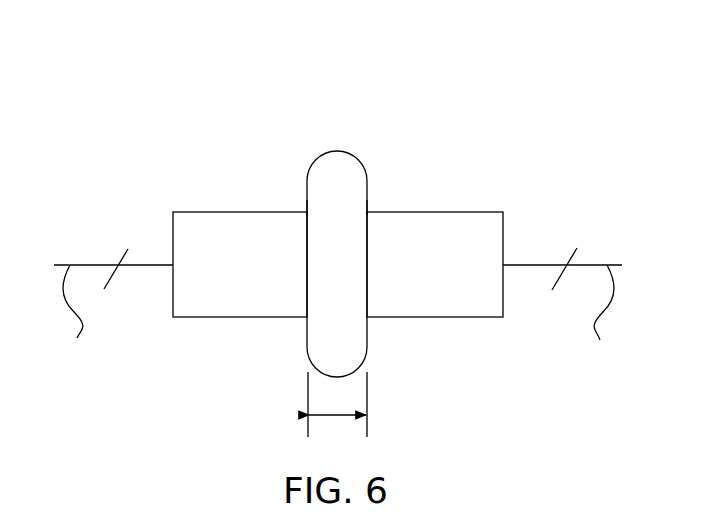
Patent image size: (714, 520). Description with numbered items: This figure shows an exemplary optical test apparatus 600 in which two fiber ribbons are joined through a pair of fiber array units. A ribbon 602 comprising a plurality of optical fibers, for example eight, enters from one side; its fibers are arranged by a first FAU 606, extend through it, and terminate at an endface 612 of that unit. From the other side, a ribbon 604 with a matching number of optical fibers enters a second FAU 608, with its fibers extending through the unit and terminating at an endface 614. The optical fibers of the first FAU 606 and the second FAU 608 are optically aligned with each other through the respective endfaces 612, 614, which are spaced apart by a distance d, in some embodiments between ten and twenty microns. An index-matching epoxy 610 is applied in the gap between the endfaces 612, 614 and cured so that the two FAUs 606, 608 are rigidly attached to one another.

The optical test apparatus 600 is at (137, 87).
The ribbon 602 is at (113, 311).
The ribbon 604 is at (563, 311).
The first FAU 606 is at (262, 297).
The second FAU 608 is at (450, 297).
The index-matching epoxy 610 is at (360, 278).
The endface 612 is at (301, 200).
The endface 614 is at (375, 200).